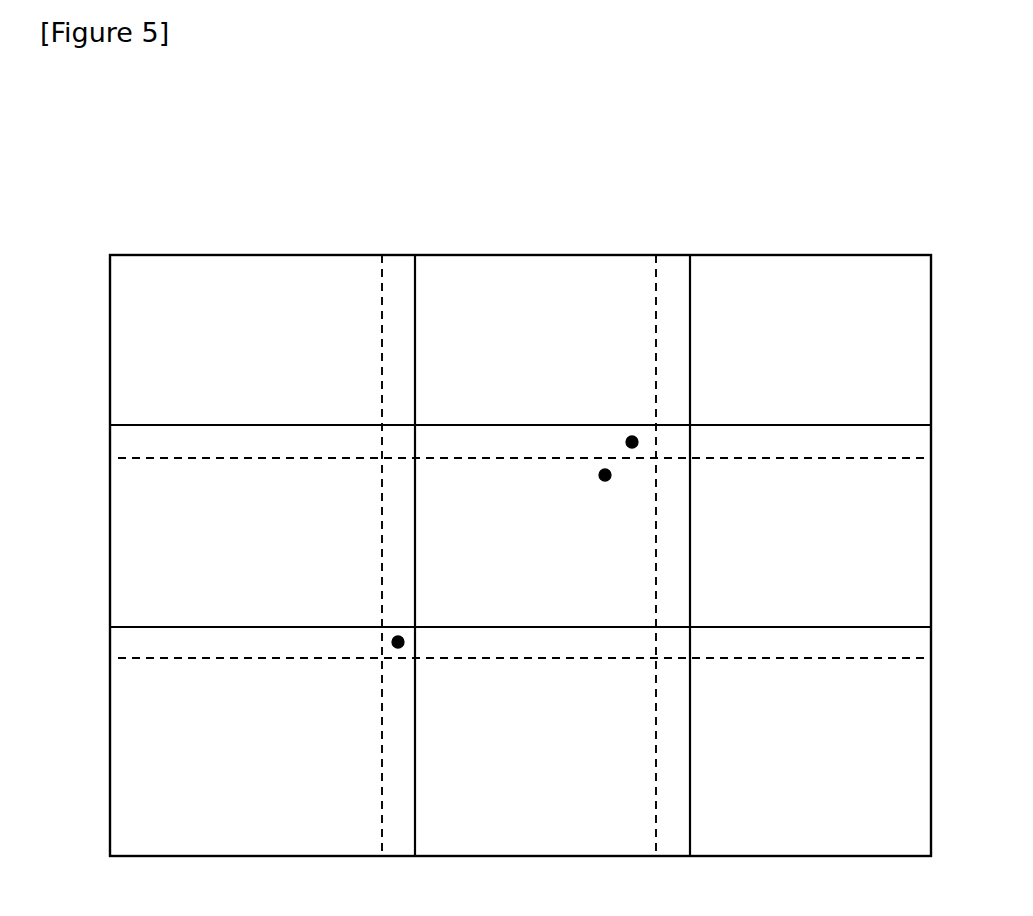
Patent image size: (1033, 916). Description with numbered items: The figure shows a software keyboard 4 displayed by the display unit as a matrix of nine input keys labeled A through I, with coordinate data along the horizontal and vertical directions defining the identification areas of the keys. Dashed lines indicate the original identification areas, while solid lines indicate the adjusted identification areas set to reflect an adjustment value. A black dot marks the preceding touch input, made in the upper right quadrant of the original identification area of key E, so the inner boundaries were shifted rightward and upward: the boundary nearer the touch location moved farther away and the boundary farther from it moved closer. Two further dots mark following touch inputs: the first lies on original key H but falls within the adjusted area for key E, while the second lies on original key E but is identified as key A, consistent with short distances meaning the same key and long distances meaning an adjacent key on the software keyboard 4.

The software keyboard 4 is at (508, 236).